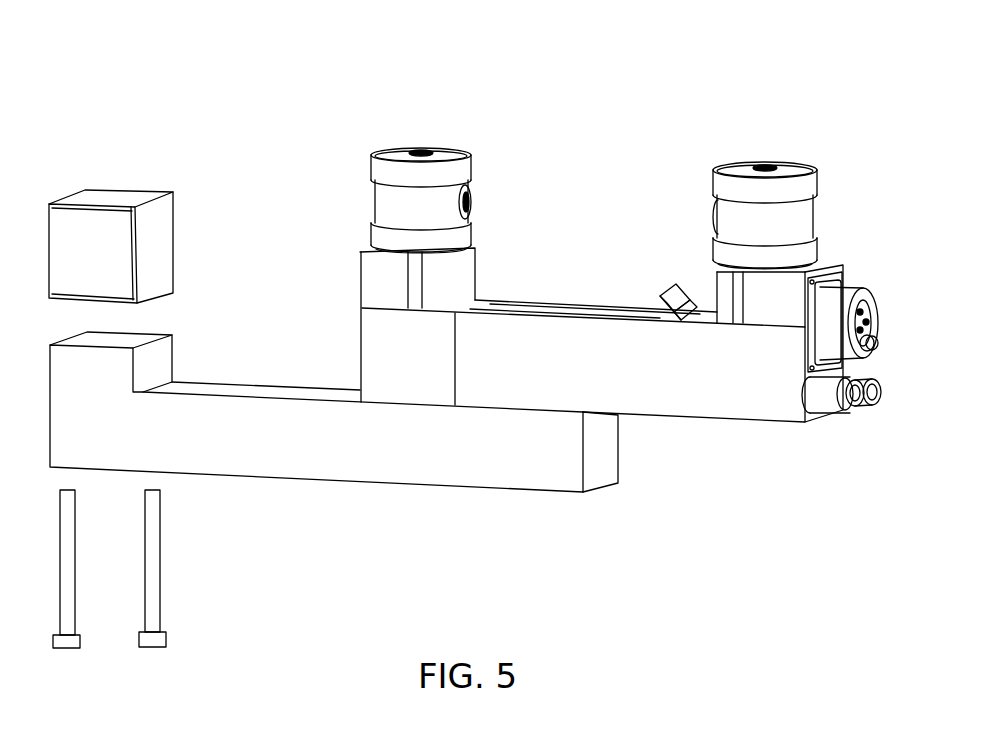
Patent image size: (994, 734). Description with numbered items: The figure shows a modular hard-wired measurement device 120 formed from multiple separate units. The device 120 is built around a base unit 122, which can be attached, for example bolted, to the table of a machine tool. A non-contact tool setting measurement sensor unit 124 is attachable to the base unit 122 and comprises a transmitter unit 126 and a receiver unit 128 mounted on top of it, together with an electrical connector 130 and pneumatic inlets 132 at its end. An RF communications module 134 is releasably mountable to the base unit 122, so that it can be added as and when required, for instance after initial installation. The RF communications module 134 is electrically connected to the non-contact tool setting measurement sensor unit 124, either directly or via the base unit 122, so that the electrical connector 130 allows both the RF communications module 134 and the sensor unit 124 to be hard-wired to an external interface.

The modular hard-wired measurement device 120 is at (813, 87).
The base unit 122 is at (297, 448).
The non-contact tool setting measurement sensor unit 124 is at (582, 387).
The transmitter unit 126 is at (448, 152).
The receiver unit 128 is at (794, 164).
The electrical connector 130 is at (872, 288).
The pneumatic inlets 132 is at (853, 410).
The RF communications module 134 is at (120, 266).